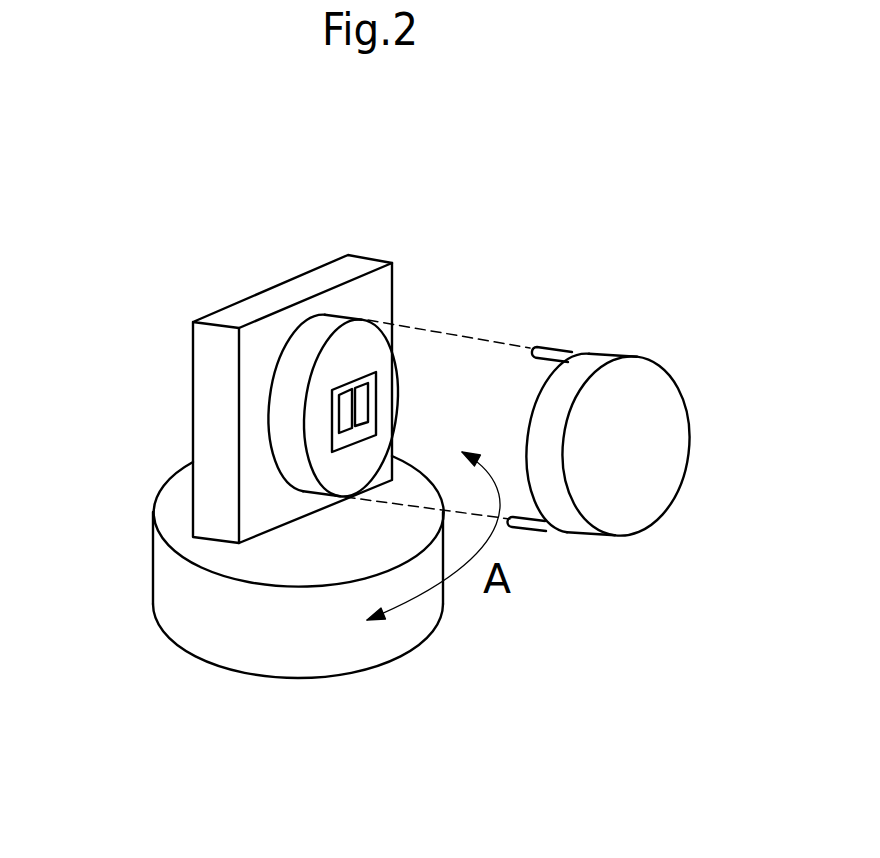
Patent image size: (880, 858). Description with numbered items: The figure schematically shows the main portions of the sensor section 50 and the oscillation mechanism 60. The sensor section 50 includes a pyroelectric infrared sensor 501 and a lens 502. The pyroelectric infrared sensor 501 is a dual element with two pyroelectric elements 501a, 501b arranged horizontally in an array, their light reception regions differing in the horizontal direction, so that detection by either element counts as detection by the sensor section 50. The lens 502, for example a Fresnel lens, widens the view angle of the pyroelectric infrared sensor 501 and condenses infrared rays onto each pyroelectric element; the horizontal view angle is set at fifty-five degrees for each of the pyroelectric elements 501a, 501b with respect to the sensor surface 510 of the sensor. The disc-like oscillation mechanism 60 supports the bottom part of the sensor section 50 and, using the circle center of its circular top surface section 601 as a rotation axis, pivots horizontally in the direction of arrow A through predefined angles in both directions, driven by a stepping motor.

The sensor section 50 is at (405, 454).
The pyroelectric infrared sensor 501 is at (282, 415).
The pyroelectric element 501a is at (342, 393).
The pyroelectric element 501b is at (367, 404).
The lens 502 is at (657, 367).
The sensor surface 510 is at (352, 460).
The oscillation mechanism 60 is at (417, 648).
The top surface section 601 is at (258, 555).